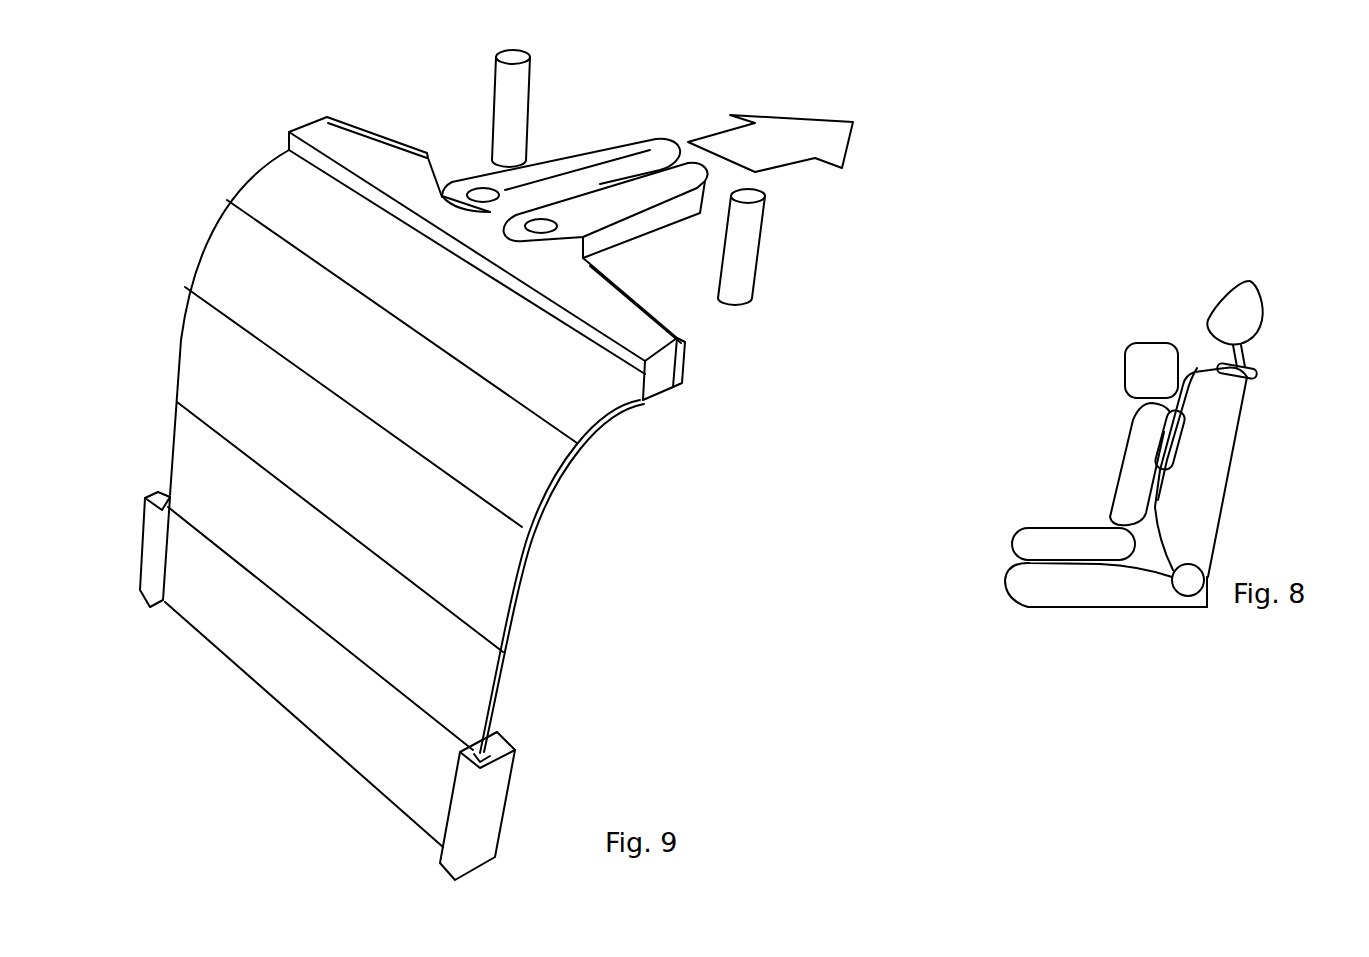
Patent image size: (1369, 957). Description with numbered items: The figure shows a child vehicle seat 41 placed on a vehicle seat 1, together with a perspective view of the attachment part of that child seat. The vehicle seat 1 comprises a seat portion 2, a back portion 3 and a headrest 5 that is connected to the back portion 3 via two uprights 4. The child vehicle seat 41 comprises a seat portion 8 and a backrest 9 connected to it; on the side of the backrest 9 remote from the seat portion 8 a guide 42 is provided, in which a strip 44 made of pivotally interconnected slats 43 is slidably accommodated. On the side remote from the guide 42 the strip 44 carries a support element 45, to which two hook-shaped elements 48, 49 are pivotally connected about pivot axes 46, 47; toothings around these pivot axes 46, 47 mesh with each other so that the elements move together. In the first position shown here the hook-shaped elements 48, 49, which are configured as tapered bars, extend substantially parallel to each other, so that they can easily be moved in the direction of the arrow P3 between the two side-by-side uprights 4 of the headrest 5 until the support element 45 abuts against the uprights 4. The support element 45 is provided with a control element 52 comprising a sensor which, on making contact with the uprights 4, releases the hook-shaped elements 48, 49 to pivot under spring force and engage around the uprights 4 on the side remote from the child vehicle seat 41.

In FIG. 8, the vehicle seat 1 is at (1274, 487).
In FIG. 8, the seat portion 2 is at (1062, 585).
In FIG. 8, the back portion 3 is at (1213, 447).
In FIG. 9, the uprights 4 is at (517, 92).
In FIG. 8, the uprights 4 is at (1245, 355).
In FIG. 8, the headrest 5 is at (1252, 313).
In FIG. 8, the seat portion 8 is at (1038, 540).
In FIG. 8, the backrest 9 is at (1135, 452).
In FIG. 8, the child vehicle seat 41 is at (1044, 436).
In FIG. 9, the guide 42 is at (487, 813).
In FIG. 8, the guide 42 is at (1175, 427).
In FIG. 9, the slats 43 is at (533, 475).
In FIG. 9, the strip 44 is at (536, 590).
In FIG. 8, the strip 44 is at (1203, 370).
In FIG. 9, the support element 45 is at (337, 143).
In FIG. 9, the pivot axis 46 is at (541, 226).
In FIG. 9, the pivot axis 47 is at (483, 193).
In FIG. 9, the hook-shaped element 48 is at (657, 222).
In FIG. 8, the hook-shaped element 48 is at (1260, 375).
In FIG. 9, the hook-shaped element 49 is at (617, 163).
In FIG. 9, the control element 52 is at (683, 337).
In FIG. 9, the arrow P3 is at (793, 132).